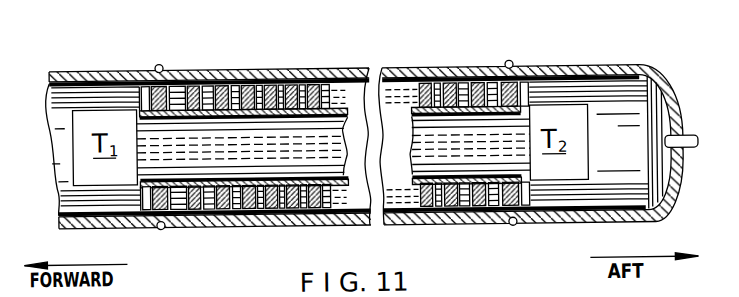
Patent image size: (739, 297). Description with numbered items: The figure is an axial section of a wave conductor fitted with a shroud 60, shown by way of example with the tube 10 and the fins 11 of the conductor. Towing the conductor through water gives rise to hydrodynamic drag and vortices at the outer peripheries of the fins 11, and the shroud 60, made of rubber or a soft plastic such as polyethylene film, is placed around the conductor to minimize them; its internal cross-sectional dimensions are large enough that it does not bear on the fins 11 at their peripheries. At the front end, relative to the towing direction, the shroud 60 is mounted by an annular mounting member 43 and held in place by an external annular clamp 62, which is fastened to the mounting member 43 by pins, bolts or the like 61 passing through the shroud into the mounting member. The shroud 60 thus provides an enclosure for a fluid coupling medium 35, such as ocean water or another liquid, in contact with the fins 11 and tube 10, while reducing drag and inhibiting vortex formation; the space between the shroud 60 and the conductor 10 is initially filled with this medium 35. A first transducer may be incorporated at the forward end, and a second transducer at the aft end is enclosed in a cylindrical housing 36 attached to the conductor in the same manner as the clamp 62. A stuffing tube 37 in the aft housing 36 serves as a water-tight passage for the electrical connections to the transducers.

The tube 10 is at (205, 205).
The fins 11 is at (331, 99).
The fluid coupling medium 35 is at (268, 79).
The cylindrical housing 36 is at (583, 68).
The stuffing tube 37 is at (690, 137).
The mounting member 43 is at (334, 115).
The shroud 60 is at (296, 79).
The pins, bolts or the like 61 is at (161, 63).
The external annular clamp 62 is at (82, 67).